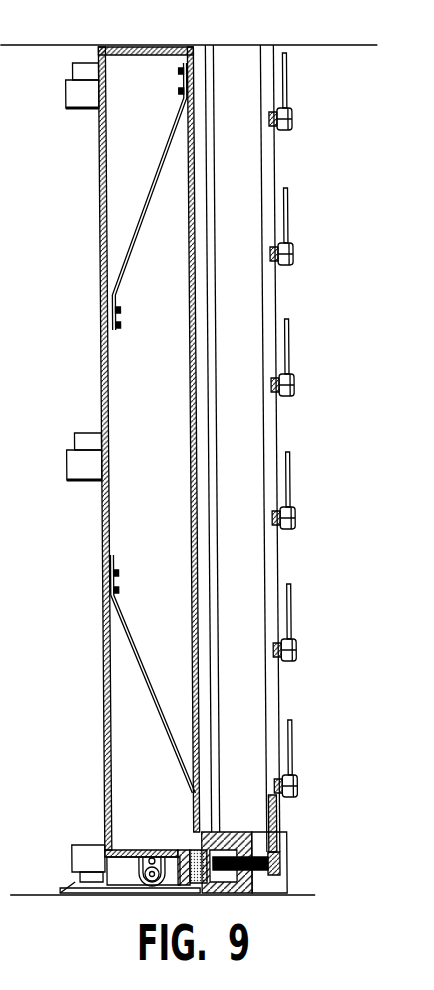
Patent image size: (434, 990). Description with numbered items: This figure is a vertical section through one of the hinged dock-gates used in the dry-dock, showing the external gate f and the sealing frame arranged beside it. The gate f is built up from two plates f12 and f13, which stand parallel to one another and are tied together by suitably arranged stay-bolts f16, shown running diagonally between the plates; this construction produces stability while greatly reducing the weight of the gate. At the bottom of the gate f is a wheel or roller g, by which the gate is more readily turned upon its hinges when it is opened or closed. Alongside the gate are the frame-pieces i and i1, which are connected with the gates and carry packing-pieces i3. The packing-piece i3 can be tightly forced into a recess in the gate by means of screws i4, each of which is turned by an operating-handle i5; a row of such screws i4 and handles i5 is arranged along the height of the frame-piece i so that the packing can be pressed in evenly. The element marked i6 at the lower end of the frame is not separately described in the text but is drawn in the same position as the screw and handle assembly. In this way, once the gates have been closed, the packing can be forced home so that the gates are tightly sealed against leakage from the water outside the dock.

The hinged dock-gate f is at (131, 466).
The plate f12 is at (100, 146).
The plate f13 is at (189, 202).
The stay-bolt f16 is at (160, 168).
The wheel or roller g is at (140, 888).
The frame-piece i is at (235, 833).
The frame-piece i1 is at (230, 438).
The packing-piece i3 is at (181, 860).
The screw i4 is at (292, 117).
The operating-handle i5 is at (286, 87).
The adjusting screw i6 is at (266, 823).